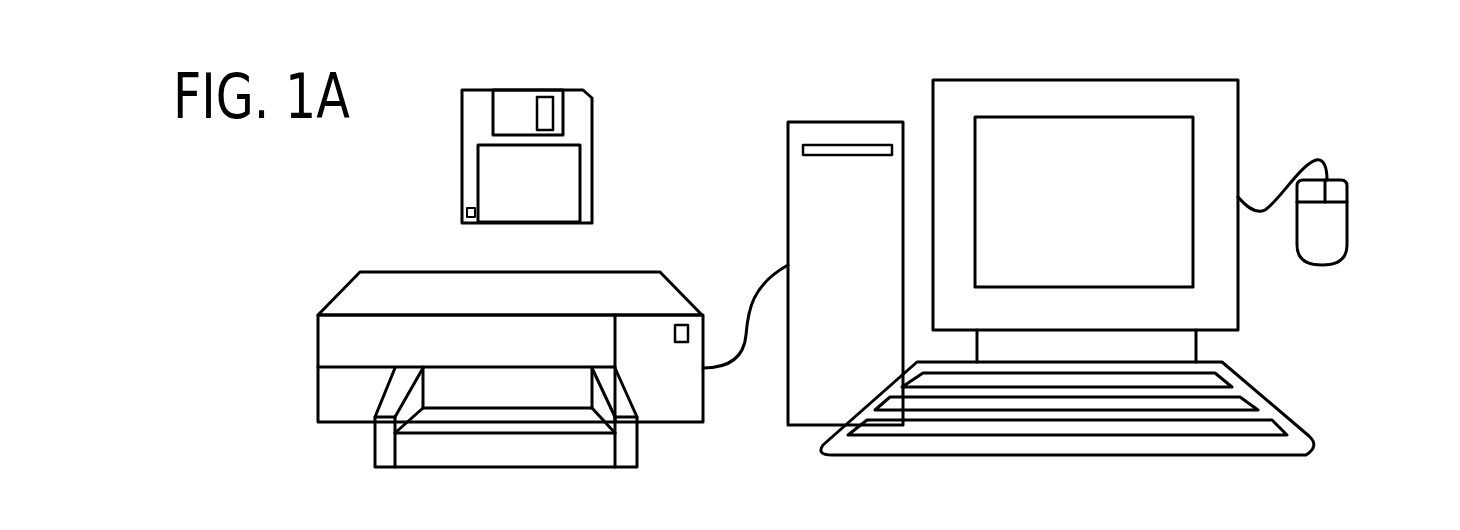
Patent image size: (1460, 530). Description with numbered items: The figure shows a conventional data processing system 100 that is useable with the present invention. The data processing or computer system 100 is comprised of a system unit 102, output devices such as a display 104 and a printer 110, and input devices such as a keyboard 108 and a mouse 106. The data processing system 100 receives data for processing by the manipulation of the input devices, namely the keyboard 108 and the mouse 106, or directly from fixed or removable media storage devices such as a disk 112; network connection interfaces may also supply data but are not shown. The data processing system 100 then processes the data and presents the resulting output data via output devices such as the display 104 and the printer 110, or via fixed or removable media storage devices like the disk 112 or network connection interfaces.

The data processing system 100 is at (1248, 42).
The system unit 102 is at (843, 122).
The display 104 is at (1028, 80).
The mouse 106 is at (1347, 228).
The keyboard 108 is at (1265, 398).
The printer 110 is at (318, 316).
The disk 112 is at (462, 170).